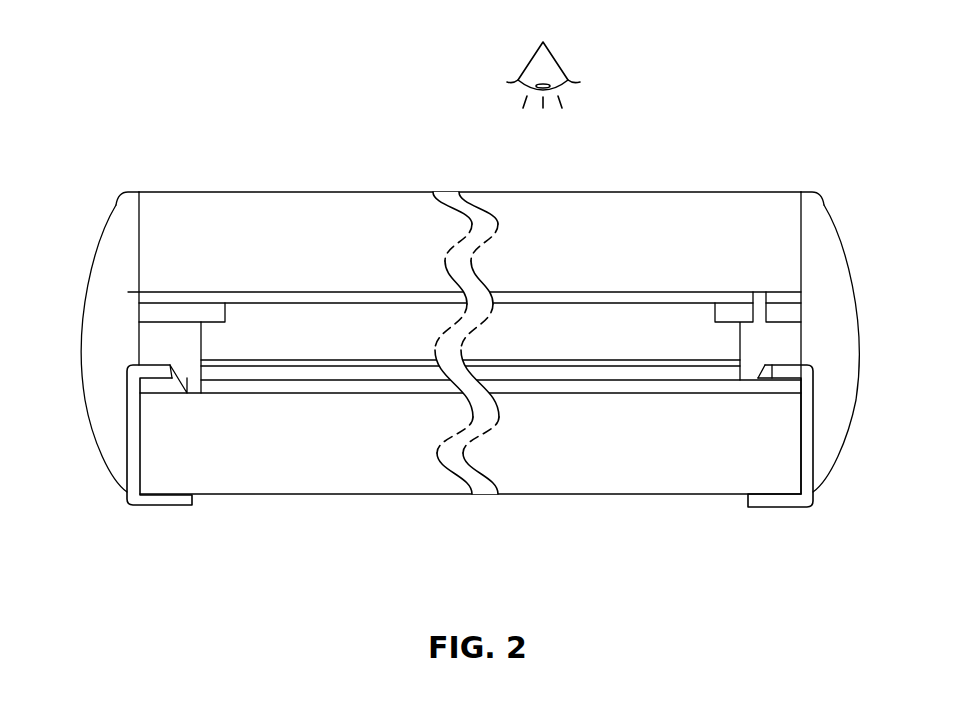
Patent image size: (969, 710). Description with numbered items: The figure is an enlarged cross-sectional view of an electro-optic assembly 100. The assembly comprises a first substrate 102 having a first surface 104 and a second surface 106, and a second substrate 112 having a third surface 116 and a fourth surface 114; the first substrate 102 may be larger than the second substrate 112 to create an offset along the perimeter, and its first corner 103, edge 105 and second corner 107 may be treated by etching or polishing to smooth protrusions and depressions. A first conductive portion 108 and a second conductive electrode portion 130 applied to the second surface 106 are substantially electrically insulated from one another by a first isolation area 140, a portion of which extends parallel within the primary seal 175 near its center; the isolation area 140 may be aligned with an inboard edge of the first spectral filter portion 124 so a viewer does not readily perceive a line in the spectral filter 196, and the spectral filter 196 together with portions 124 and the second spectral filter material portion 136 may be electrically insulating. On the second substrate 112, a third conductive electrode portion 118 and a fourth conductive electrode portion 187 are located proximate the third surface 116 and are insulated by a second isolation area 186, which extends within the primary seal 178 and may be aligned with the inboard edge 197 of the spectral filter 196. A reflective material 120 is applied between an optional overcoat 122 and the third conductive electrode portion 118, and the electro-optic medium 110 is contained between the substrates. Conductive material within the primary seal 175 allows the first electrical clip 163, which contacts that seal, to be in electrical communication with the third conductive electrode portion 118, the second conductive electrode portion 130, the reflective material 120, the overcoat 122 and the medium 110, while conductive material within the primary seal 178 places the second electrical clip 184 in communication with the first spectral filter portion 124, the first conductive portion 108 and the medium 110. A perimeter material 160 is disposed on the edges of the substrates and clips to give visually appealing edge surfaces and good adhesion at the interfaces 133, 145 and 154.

The electro-optic assembly 100 is at (180, 76).
The first substrate 102 is at (600, 253).
The first corner 103 is at (139, 190).
The first surface 104 is at (572, 190).
The edge 105 is at (138, 243).
The second surface 106 is at (530, 292).
The second corner 107 is at (128, 292).
The first conductive portion 108 is at (510, 298).
The electro-optic medium 110 is at (394, 346).
The second substrate 112 is at (582, 470).
The fourth surface 114 is at (528, 494).
The third surface 116 is at (415, 393).
The third conductive electrode portion 118 is at (368, 385).
The reflective material 120 is at (317, 372).
The optional overcoat 122 is at (263, 360).
The first spectral filter portion 124 is at (740, 312).
The second conductive electrode portion 130 is at (777, 297).
The interface 133 is at (802, 225).
The second spectral filter material portion 136 is at (782, 307).
The first isolation area 140 is at (761, 290).
The interface 145 is at (802, 328).
The interface 154 is at (802, 467).
The perimeter material 160 is at (100, 393).
The first electrical clip 163 is at (812, 432).
The primary seal 175 is at (762, 353).
The primary seal 178 is at (193, 348).
The second electrical clip 184 is at (125, 452).
The second isolation area 186 is at (160, 387).
The fourth conductive electrode portion 187 is at (187, 397).
The spectral filter 196 is at (209, 316).
The inboard edge 197 is at (227, 314).